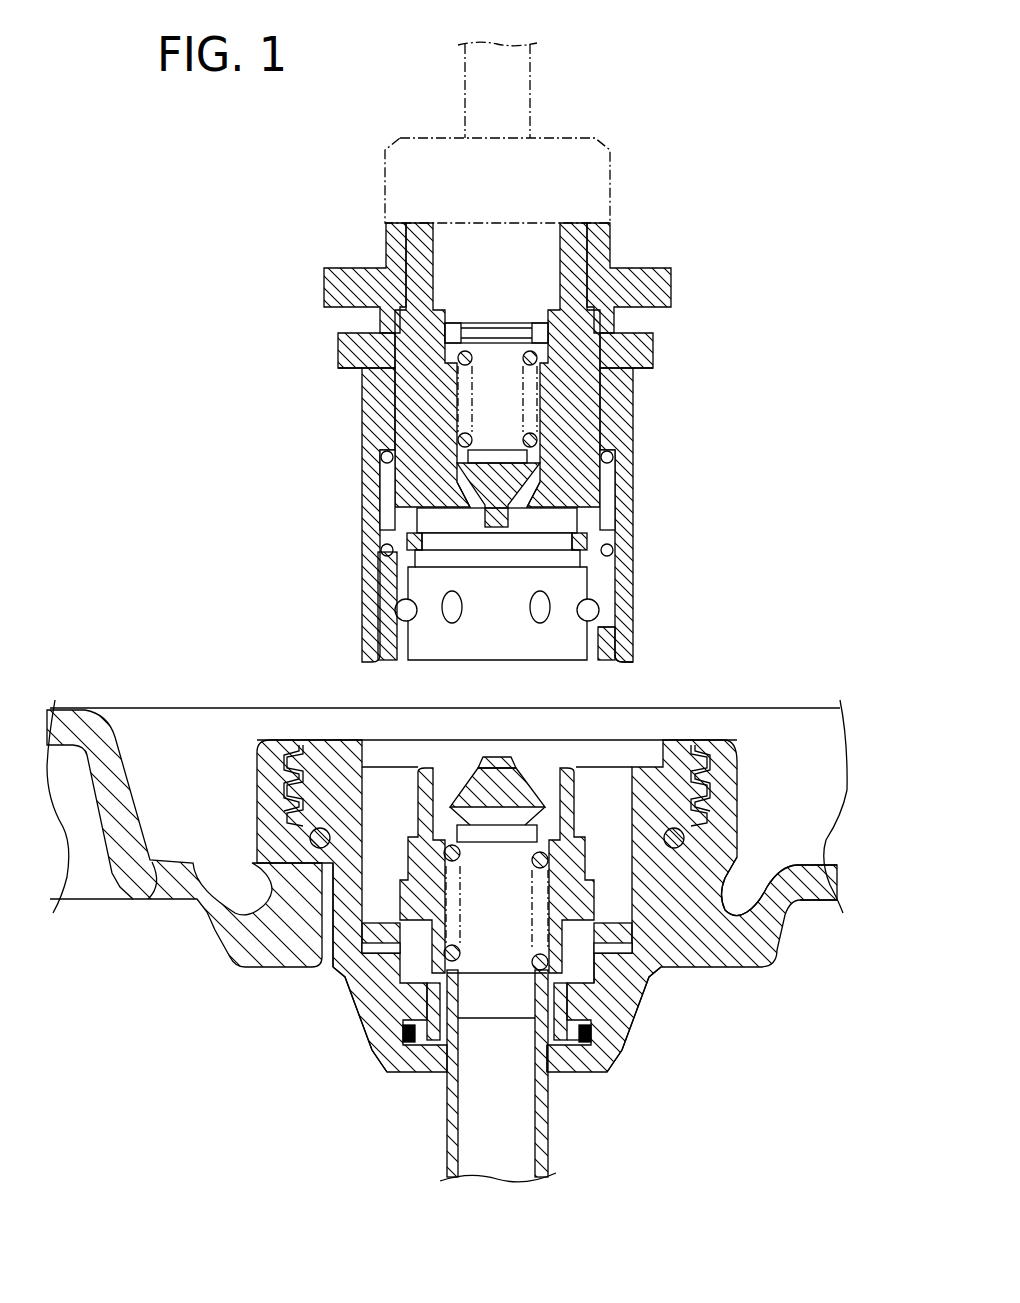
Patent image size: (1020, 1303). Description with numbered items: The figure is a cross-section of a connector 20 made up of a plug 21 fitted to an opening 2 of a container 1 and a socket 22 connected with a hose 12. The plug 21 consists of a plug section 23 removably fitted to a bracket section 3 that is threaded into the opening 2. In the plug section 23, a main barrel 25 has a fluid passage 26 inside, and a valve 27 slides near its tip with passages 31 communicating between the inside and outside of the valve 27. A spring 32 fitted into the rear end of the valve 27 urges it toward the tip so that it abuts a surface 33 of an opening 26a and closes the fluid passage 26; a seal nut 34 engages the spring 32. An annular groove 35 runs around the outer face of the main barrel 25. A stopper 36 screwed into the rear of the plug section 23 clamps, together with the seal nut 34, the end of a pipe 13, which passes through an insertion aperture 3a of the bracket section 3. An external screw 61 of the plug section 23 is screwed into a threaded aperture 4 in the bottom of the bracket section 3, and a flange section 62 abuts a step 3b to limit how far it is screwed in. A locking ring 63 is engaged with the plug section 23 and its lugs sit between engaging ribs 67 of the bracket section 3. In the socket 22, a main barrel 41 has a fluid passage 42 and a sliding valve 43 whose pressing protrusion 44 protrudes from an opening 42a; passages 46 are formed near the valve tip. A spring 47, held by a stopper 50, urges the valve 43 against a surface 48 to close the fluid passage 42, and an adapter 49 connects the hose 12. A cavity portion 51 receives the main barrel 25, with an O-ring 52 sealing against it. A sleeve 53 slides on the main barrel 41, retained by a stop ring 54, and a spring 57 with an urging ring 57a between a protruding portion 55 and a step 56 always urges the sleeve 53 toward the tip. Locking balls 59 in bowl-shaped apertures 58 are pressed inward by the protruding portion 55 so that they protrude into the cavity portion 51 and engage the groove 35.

The container 1 is at (817, 818).
The opening 2 is at (690, 741).
The bracket section 3 is at (315, 869).
The insertion aperture 3a is at (548, 1077).
The step 3b is at (645, 972).
The threaded aperture 4 is at (600, 1026).
The hose 12 is at (531, 77).
The pipe 13 is at (550, 1158).
The connector 20 is at (547, 376).
The plug 21 is at (464, 909).
The socket 22 is at (650, 260).
The plug section 23 is at (467, 817).
The main barrel 25 is at (710, 777).
The fluid passage 26 is at (541, 787).
The opening 26a is at (550, 790).
The valve 27 is at (290, 797).
The passages 31 is at (441, 762).
The spring 32 is at (462, 890).
The surface 33 is at (684, 826).
The seal nut 34 is at (470, 997).
The annular groove 35 is at (730, 905).
The stopper 36 is at (577, 1045).
The main barrel 41 is at (598, 360).
The fluid passage 42 is at (455, 480).
The opening 42a is at (467, 509).
The valve 43 is at (447, 400).
The pressing protrusion 44 is at (487, 525).
The passages 46 is at (541, 470).
The spring 47 is at (527, 373).
The surface 48 is at (467, 457).
The adapter 49 is at (611, 162).
The stopper 50 is at (455, 327).
The cavity portion 51 is at (570, 582).
The O-ring 52 is at (520, 547).
The sleeve 53 is at (634, 400).
The stop ring 54 is at (617, 661).
The protruding portion 55 is at (597, 640).
The step 56 is at (612, 462).
The spring 57 is at (610, 512).
The urging ring 57a is at (380, 583).
The apertures 58 is at (587, 608).
The locking balls 59 is at (605, 620).
The external screw 61 is at (597, 993).
The flange section 62 is at (363, 993).
The locking ring 63 is at (383, 921).
The engaging ribs 67 is at (367, 935).